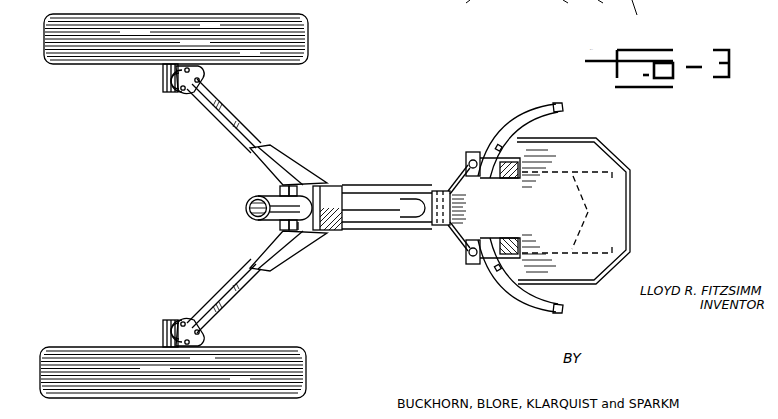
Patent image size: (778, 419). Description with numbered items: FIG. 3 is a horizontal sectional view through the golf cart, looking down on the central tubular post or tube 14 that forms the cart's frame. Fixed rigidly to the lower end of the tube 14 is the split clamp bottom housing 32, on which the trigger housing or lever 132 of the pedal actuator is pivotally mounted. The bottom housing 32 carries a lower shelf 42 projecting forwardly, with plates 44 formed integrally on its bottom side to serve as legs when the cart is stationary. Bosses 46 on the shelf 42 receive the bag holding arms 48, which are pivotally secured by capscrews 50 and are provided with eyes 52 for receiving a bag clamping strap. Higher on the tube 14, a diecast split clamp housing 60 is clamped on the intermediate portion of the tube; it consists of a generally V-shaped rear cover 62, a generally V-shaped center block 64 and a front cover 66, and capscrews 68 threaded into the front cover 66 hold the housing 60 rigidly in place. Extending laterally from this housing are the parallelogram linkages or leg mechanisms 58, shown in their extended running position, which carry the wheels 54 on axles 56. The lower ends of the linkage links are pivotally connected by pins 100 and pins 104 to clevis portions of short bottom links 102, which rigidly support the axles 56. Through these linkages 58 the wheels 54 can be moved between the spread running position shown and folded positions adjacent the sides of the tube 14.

The tubular post or tube 14 is at (352, 226).
The bottom housing or bracket 32 is at (442, 190).
The lower shelf or support 42 is at (598, 140).
The plates 44 is at (567, 212).
The bosses 46 is at (506, 180).
The bag holding arms 48 is at (516, 121).
The capscrews 50 is at (476, 160).
The eyes 52 is at (541, 123).
The wheels 54 is at (310, 24).
The axles 56 is at (163, 78).
The parallelogram linkages or leg mechanisms 58 is at (227, 94).
The split clamp housing or bracket 60 is at (303, 150).
The rear cover 62 is at (270, 237).
The center block 64 is at (306, 232).
The front cover 66 is at (318, 190).
The capscrews 68 is at (282, 190).
The pins 100 is at (188, 92).
The short bottom links 102 is at (212, 77).
The pins 104 is at (178, 92).
The trigger housing or lever 132 is at (380, 230).